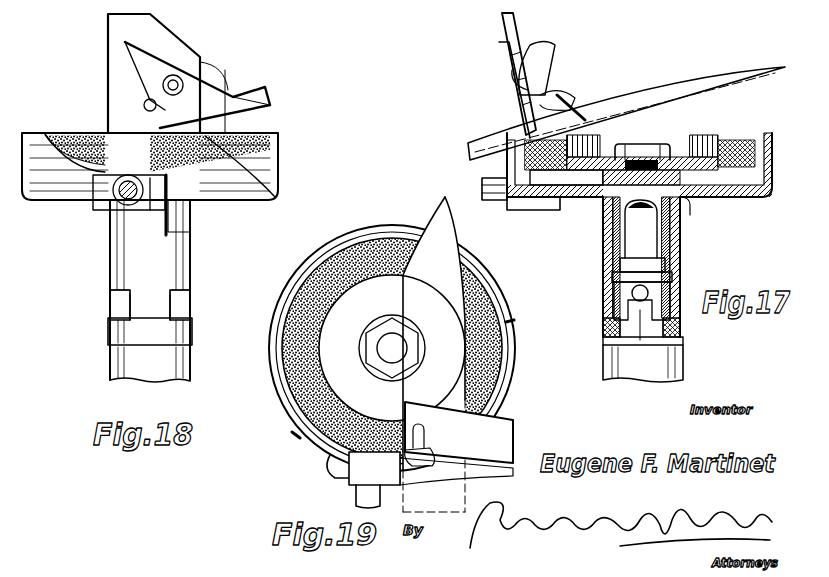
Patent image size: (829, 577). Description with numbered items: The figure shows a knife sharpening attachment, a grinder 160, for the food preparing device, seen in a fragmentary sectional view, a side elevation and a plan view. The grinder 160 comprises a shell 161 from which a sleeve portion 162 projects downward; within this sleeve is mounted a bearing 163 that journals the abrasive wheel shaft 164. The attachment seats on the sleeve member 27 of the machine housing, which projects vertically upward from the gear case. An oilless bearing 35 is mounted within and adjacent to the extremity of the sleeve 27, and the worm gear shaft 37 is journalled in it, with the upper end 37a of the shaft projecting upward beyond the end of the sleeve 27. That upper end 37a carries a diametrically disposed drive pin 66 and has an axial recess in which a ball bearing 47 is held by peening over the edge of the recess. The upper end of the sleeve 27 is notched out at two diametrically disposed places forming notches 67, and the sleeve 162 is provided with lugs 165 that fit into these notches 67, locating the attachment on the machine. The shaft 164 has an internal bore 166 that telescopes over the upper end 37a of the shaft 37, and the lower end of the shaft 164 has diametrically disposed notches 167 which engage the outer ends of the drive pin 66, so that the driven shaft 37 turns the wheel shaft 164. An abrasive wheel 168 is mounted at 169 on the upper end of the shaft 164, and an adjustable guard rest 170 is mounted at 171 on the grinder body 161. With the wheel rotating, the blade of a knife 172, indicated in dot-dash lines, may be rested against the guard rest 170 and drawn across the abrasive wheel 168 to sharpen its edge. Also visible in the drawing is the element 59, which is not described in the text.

In FIG. 18, the sleeve member 27 is at (182, 371).
In FIG. 17, the sleeve member 27 is at (643, 363).
In FIG. 17, the oilless bearing 35 is at (605, 338).
In FIG. 17, the worm gear shaft 37 is at (683, 340).
In FIG. 17, the upper end of the shaft 37a is at (642, 229).
In FIG. 17, the ball bearing 47 is at (680, 185).
In FIG. 18, the collar ring 59 is at (150, 331).
In FIG. 17, the collar ring 59 is at (632, 350).
In FIG. 17, the drive pin 66 is at (648, 295).
In FIG. 18, the notches 67 is at (122, 310).
In FIG. 17, the notches 67 is at (606, 322).
In FIG. 18, the knife sharpener or grinder 160 is at (280, 128).
In FIG. 19, the knife sharpener or grinder 160 is at (403, 225).
In FIG. 17, the knife sharpener or grinder 160 is at (605, 98).
In FIG. 18, the shell 161 is at (255, 196).
In FIG. 19, the shell 161 is at (500, 294).
In FIG. 17, the shell 161 is at (705, 197).
In FIG. 18, the sleeve portion 162 is at (150, 290).
In FIG. 17, the sleeve portion 162 is at (672, 248).
In FIG. 18, the bearing 163 is at (172, 230).
In FIG. 17, the bearing 163 is at (605, 240).
In FIG. 18, the abrasive wheel shaft 164 is at (190, 212).
In FIG. 17, the abrasive wheel shaft 164 is at (612, 262).
In FIG. 18, the lugs 165 is at (172, 304).
In FIG. 17, the lugs 165 is at (665, 290).
In FIG. 17, the internal bore 166 is at (690, 205).
In FIG. 17, the notches 167 is at (628, 298).
In FIG. 18, the abrasive wheel 168 is at (95, 140).
In FIG. 19, the abrasive wheel 168 is at (338, 258).
In FIG. 17, the abrasive wheel 168 is at (732, 140).
In FIG. 19, the mounting 169 is at (378, 352).
In FIG. 17, the mounting 169 is at (650, 148).
In FIG. 18, the adjustable guard rest 170 is at (188, 44).
In FIG. 19, the adjustable guard rest 170 is at (512, 428).
In FIG. 17, the adjustable guard rest 170 is at (497, 98).
In FIG. 18, the mounting 171 is at (110, 200).
In FIG. 19, the mounting 171 is at (356, 496).
In FIG. 17, the mounting 171 is at (498, 205).
In FIG. 18, the knife 172 is at (168, 118).
In FIG. 19, the knife 172 is at (450, 205).
In FIG. 17, the knife 172 is at (730, 73).